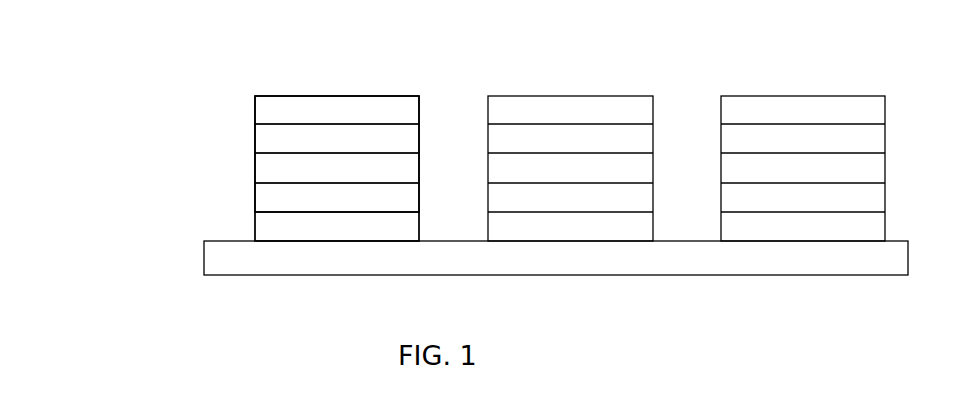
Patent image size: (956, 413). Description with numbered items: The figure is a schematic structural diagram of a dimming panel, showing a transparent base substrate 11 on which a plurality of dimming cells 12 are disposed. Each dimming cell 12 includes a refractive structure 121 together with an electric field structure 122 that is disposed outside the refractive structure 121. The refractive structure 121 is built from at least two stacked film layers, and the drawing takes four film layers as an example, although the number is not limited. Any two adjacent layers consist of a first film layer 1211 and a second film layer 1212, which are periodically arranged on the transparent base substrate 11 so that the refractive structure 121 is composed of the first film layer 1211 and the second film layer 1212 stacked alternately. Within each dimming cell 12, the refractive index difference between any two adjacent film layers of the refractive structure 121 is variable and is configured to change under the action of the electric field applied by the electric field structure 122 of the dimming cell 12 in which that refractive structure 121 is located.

The transparent base substrate 11 is at (215, 255).
The dimming cell 12 is at (72, 140).
The refractive structure 121 is at (143, 103).
The first film layer 1211 is at (262, 114).
The second film layer 1212 is at (262, 143).
The electric field structure 122 is at (262, 228).